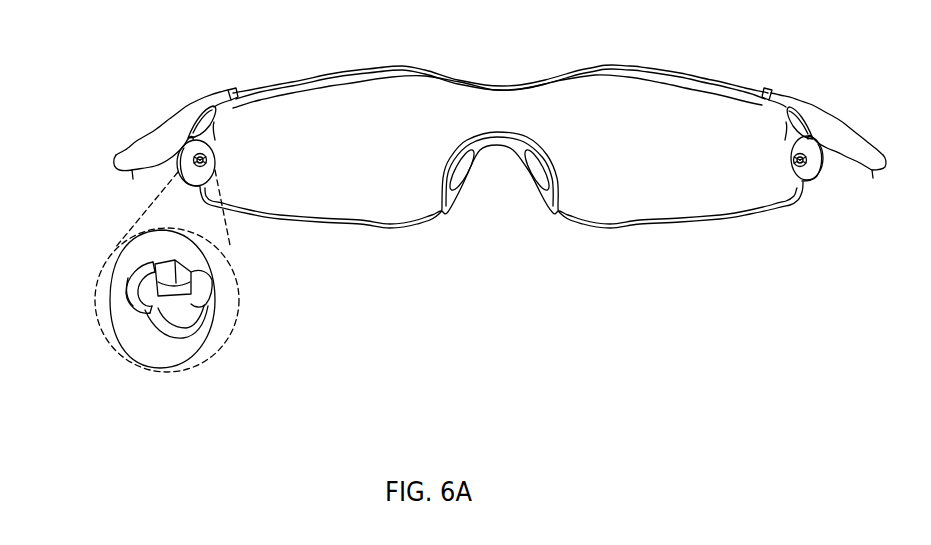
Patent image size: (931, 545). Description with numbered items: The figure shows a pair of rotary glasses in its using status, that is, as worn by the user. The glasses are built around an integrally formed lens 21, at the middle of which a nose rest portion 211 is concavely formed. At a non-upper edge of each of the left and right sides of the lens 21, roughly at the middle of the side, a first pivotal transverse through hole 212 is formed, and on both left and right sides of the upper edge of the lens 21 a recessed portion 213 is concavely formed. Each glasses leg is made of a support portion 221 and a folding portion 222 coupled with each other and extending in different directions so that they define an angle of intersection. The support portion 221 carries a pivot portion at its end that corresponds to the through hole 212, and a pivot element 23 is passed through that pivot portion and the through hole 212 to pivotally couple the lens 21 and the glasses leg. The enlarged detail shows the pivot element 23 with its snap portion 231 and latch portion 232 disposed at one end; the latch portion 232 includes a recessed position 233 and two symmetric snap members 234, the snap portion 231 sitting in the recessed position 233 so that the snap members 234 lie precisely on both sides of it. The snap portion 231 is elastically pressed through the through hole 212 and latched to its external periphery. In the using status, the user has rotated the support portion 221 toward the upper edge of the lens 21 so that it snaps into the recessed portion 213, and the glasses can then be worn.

The lens 21 is at (373, 102).
The nose rest portion 211 is at (457, 193).
The first pivotal transverse through hole 212 is at (158, 322).
The recessed portion 213 is at (237, 90).
The support portion 221 is at (218, 102).
The folding portion 222 is at (158, 137).
The pivot element 23 is at (188, 289).
The snap portion 231 is at (175, 270).
The latch portion 232 is at (175, 333).
The recessed position 233 is at (152, 293).
The snap members 234 is at (135, 290).